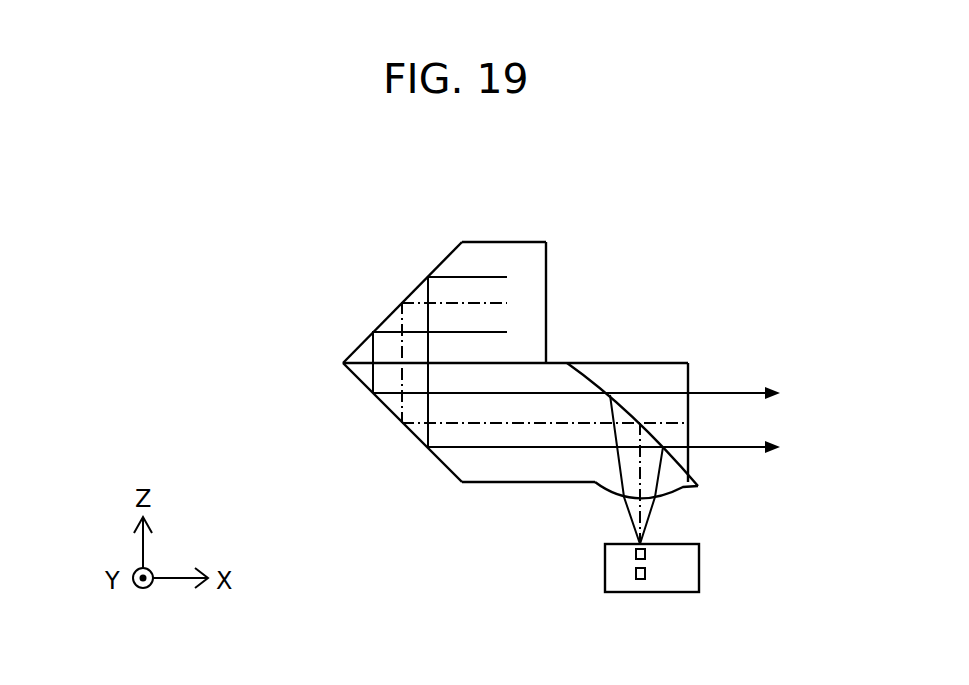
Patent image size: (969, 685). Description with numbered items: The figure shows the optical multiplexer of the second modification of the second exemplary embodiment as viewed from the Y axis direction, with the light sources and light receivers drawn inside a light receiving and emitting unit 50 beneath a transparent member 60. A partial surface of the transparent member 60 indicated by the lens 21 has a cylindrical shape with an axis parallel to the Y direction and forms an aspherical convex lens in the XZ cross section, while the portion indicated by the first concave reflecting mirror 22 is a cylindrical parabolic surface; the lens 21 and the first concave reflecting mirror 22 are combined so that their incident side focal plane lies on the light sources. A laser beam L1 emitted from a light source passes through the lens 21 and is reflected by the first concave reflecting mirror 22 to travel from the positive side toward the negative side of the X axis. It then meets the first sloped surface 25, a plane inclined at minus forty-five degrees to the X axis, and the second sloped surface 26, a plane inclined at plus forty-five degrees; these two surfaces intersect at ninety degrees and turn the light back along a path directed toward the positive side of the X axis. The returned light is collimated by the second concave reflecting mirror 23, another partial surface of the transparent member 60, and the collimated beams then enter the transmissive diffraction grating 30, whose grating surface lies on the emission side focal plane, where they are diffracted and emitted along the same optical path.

The transparent member 60 is at (546, 289).
The second concave reflecting mirror 23 is at (493, 252).
The second sloped surface 26 is at (414, 286).
The first sloped surface 25 is at (390, 412).
The first concave reflecting mirror 22 is at (588, 375).
The transmissive diffraction grating 30 is at (690, 370).
The lens 21 is at (668, 495).
The laser beam L1 is at (402, 351).
The detector housing 50 is at (604, 562).